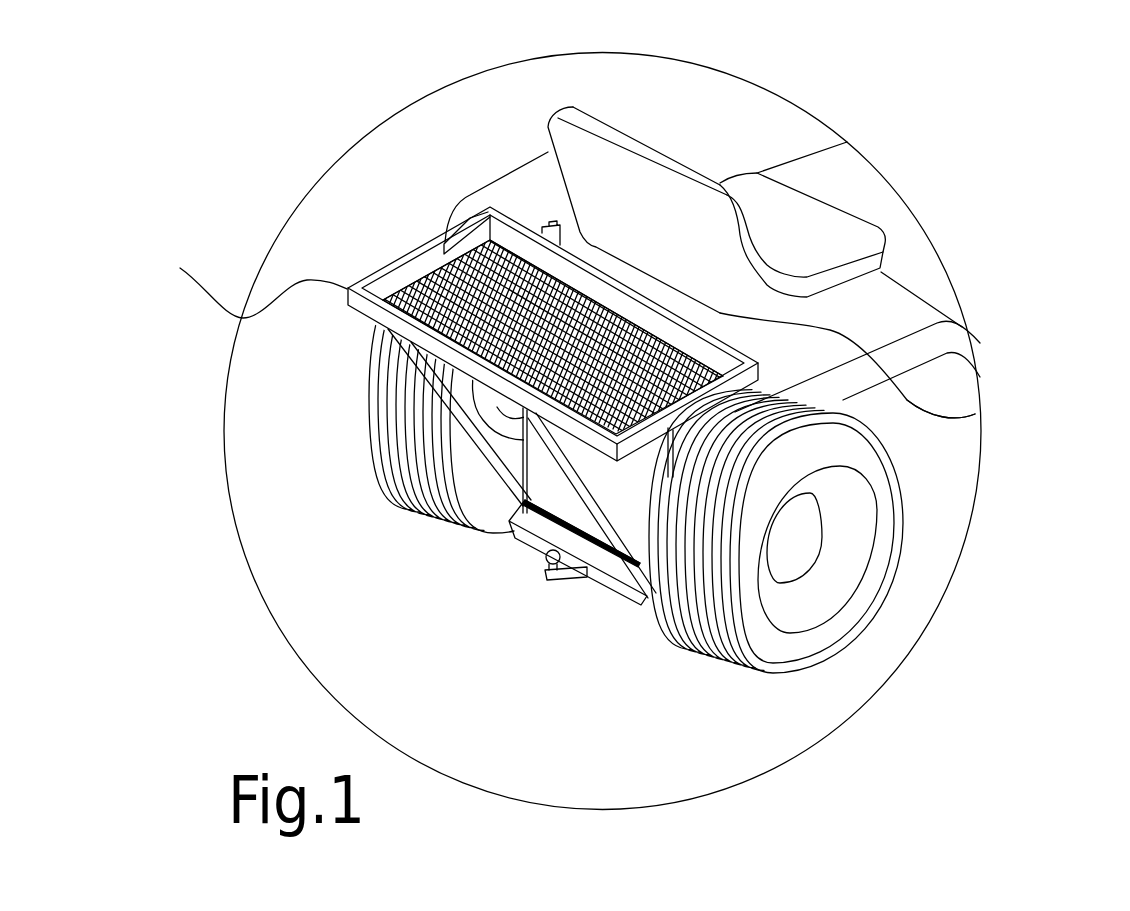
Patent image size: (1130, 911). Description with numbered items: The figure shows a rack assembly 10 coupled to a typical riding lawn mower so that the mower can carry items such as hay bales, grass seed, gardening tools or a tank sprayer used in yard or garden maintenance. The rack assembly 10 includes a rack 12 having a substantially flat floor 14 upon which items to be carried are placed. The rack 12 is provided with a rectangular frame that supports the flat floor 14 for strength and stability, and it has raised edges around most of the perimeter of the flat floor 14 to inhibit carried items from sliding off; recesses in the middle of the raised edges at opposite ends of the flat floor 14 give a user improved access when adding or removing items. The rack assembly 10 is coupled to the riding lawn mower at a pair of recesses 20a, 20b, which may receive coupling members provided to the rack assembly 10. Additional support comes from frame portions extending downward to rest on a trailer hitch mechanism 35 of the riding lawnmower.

The rack assembly 10 is at (522, 311).
The rack 12 is at (243, 318).
The flat floor 14 is at (483, 247).
The recess 20a is at (553, 227).
The recess 20b is at (975, 414).
The trailer hitch mechanism 35 is at (530, 575).